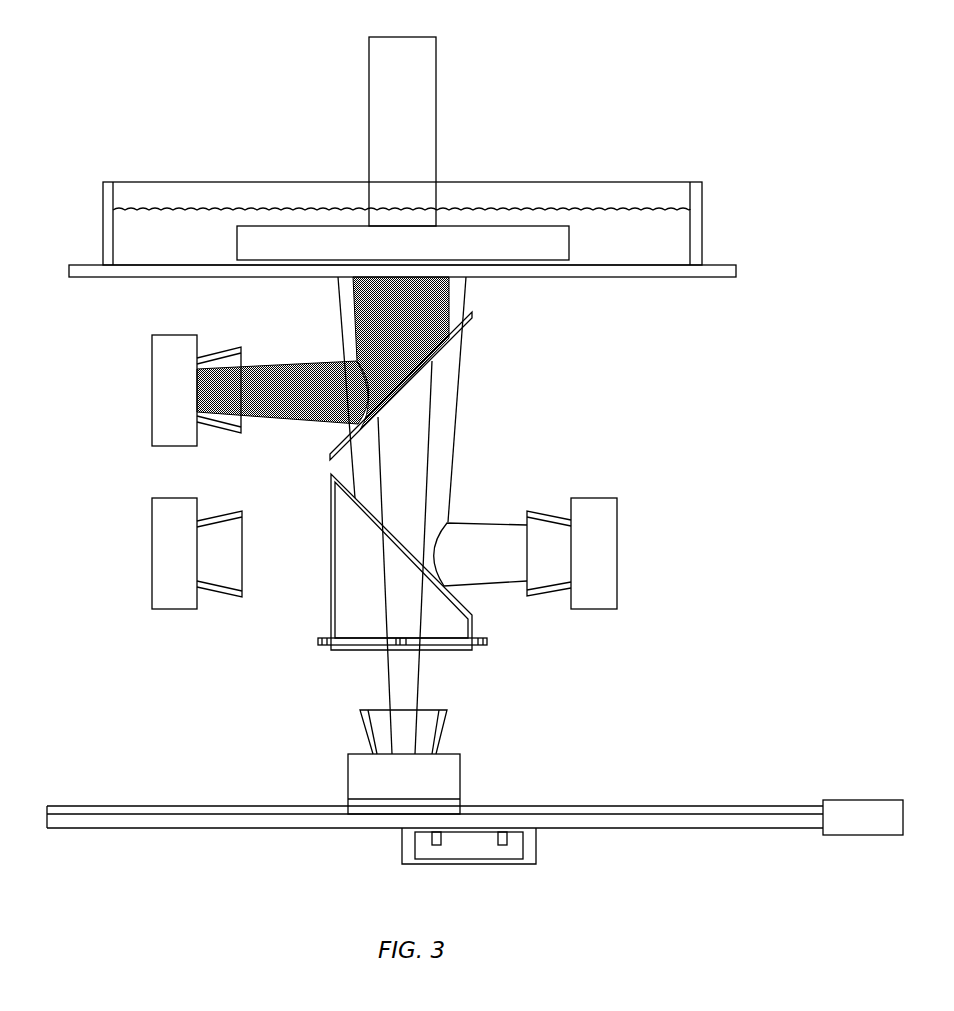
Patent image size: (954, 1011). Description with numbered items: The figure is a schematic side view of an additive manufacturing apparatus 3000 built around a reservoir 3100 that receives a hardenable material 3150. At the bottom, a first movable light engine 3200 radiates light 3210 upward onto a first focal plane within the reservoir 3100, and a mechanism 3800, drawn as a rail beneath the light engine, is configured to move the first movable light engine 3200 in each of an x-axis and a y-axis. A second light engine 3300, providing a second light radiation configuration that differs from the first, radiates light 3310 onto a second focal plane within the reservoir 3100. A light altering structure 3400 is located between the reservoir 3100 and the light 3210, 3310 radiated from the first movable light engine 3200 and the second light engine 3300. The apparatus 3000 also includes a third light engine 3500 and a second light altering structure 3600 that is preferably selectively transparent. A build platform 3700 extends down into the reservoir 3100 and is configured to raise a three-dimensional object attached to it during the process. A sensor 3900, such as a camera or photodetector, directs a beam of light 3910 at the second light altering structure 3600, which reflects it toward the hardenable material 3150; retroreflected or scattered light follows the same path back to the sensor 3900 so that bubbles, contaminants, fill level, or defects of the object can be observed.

The apparatus 3000 is at (702, 86).
The reservoir 3100 is at (703, 222).
The hardenable material 3150 is at (133, 236).
The build platform 3700 is at (385, 82).
The beam of light 3910 is at (387, 295).
The sensor 3900 is at (175, 387).
The second light altering structure 3600 is at (460, 332).
The light 3310 is at (455, 432).
The third light engine 3500 is at (163, 555).
The second light engine 3300 is at (602, 552).
The light altering structure 3400 is at (480, 647).
The light 3210 is at (387, 673).
The first movable light engine 3200 is at (368, 783).
The mechanism 3800 is at (530, 838).